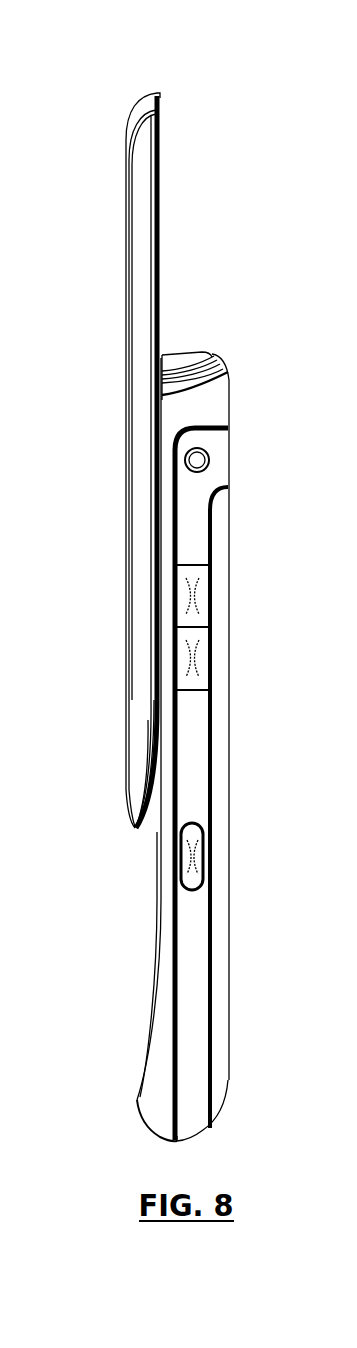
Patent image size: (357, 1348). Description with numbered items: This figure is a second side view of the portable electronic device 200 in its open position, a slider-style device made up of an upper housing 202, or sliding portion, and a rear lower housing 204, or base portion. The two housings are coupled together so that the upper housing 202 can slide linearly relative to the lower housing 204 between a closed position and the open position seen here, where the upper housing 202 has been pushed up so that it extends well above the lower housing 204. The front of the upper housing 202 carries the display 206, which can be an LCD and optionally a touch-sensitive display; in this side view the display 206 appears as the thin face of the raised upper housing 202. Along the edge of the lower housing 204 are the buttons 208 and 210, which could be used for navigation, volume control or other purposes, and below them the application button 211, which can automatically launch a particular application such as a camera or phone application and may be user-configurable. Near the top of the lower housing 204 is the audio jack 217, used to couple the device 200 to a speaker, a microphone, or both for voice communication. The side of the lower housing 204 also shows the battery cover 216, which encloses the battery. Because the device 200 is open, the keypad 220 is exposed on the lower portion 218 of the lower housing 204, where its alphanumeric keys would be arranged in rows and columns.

The portable electronic device 200 is at (176, 66).
The upper housing 202 is at (140, 182).
The lower housing 204 is at (195, 975).
The display 206 is at (126, 487).
The button 208 is at (203, 600).
The button 210 is at (203, 660).
The application button 211 is at (198, 860).
The battery cover 216 is at (216, 784).
The audio jack 217 is at (205, 460).
The lower portion 218 is at (202, 1049).
The keypad 220 is at (136, 1002).